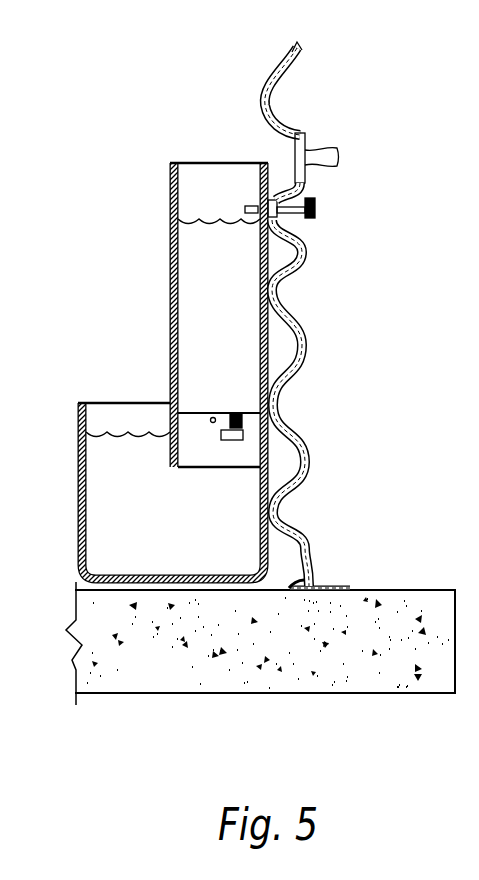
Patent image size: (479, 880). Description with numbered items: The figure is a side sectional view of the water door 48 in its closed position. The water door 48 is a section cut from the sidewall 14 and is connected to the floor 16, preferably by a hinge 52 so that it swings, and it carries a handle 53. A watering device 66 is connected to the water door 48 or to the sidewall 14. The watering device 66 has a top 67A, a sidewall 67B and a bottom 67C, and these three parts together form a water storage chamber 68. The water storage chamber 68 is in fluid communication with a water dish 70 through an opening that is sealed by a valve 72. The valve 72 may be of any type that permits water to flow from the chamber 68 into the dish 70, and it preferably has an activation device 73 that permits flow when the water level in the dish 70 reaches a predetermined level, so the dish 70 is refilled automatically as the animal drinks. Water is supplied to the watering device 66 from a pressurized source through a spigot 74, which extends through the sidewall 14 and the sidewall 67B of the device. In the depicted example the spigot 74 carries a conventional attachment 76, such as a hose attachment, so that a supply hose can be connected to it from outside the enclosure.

The sidewall 14 is at (292, 60).
The floor 16 is at (144, 373).
The water door 48 is at (313, 353).
The hinge 52 is at (345, 547).
The handle 53 is at (331, 150).
The watering device 66 is at (118, 148).
The top 67A is at (217, 162).
The sidewall 67B is at (268, 270).
The bottom 67C is at (196, 466).
The water storage chamber 68 is at (231, 282).
The water dish 70 is at (98, 475).
The valve 72 is at (250, 417).
The activation device 73 is at (244, 438).
The spigot 74 is at (314, 215).
The attachment 76 is at (313, 219).